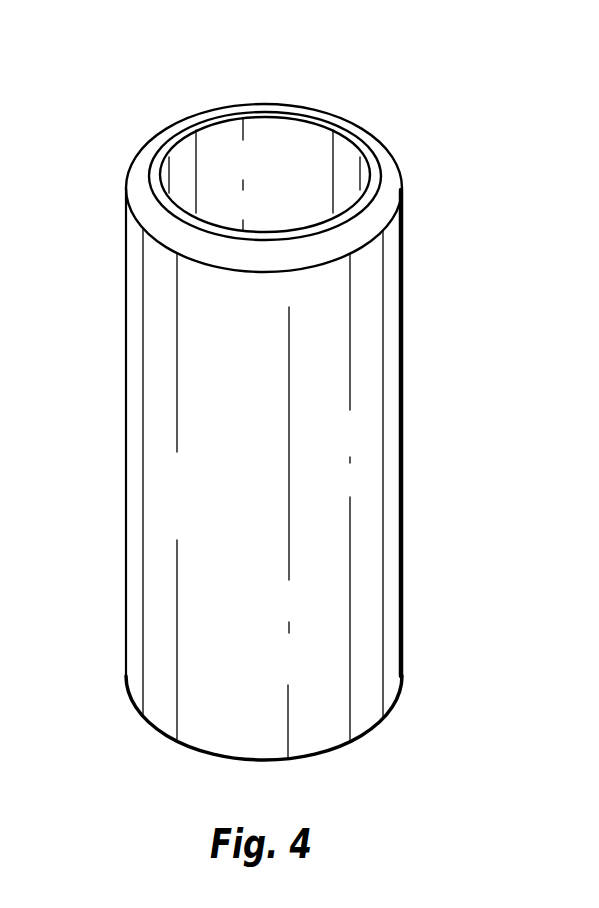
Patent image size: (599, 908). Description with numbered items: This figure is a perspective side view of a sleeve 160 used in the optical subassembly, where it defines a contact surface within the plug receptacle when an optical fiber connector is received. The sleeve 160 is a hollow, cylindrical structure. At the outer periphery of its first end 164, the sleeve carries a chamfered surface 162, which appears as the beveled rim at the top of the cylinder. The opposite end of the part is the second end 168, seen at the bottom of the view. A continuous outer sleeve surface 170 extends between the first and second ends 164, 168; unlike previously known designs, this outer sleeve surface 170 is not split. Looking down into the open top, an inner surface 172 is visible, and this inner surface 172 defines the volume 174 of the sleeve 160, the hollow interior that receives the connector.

The sleeve 160 is at (432, 347).
The chamfered surface 162 is at (387, 193).
The first end 164 is at (178, 133).
The second end 168 is at (148, 725).
The outer sleeve surface 170 is at (263, 493).
The inner surface 172 is at (267, 130).
The volume 174 is at (308, 173).